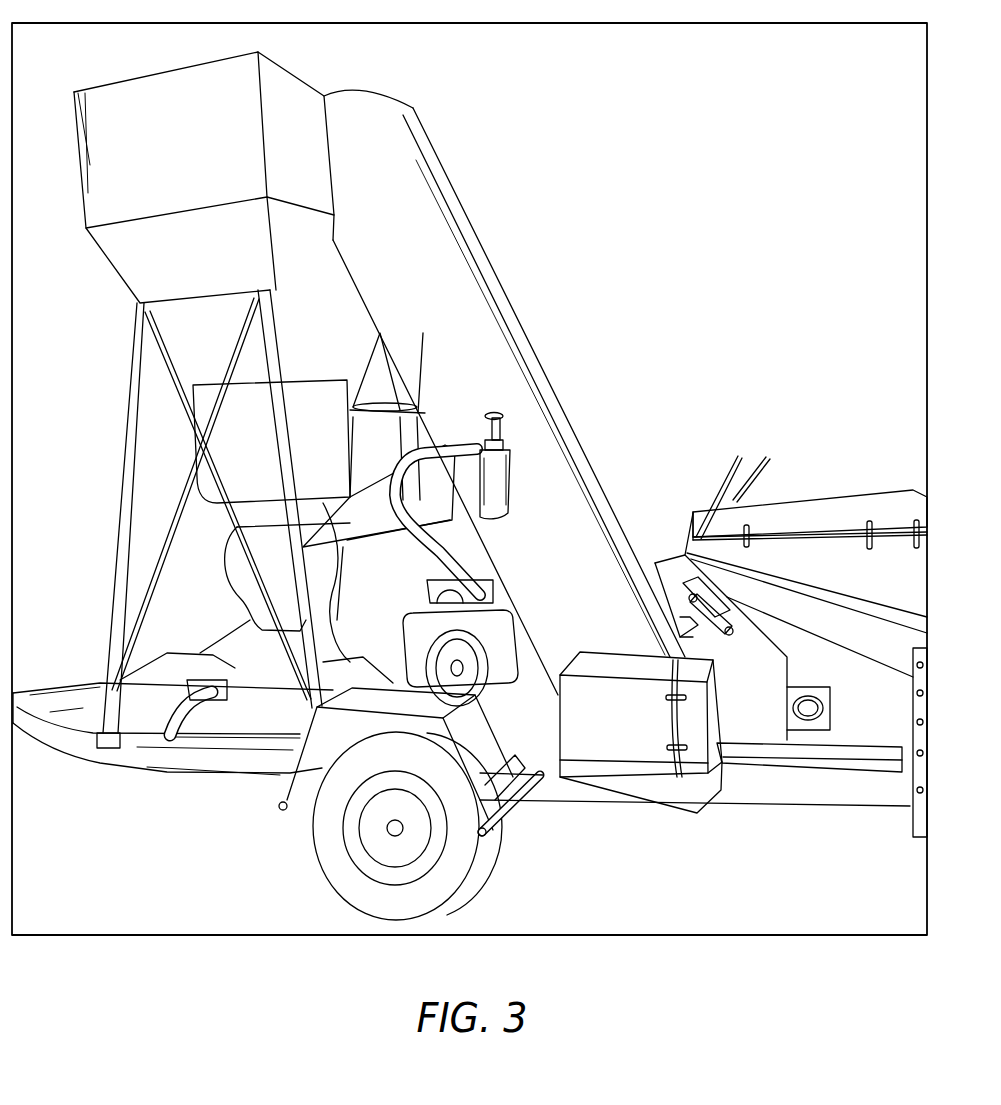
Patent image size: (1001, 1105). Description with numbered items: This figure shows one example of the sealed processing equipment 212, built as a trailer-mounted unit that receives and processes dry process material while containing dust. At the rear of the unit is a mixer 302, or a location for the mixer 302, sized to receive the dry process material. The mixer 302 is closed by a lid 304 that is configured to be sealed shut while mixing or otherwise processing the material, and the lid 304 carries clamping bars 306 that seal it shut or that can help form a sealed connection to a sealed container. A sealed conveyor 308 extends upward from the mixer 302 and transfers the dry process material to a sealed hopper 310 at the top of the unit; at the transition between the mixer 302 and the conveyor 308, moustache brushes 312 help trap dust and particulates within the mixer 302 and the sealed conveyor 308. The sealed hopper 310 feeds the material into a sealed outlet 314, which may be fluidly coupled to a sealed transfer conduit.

The sealed processing equipment 212 is at (757, 208).
The mixer 302 is at (850, 488).
The lid 304 is at (804, 492).
The clamping bars 306 is at (758, 533).
The sealed conveyor 308 is at (487, 332).
The sealed hopper 310 is at (245, 108).
The moustache brushes 312 is at (677, 605).
The sealed outlet 314 is at (190, 435).